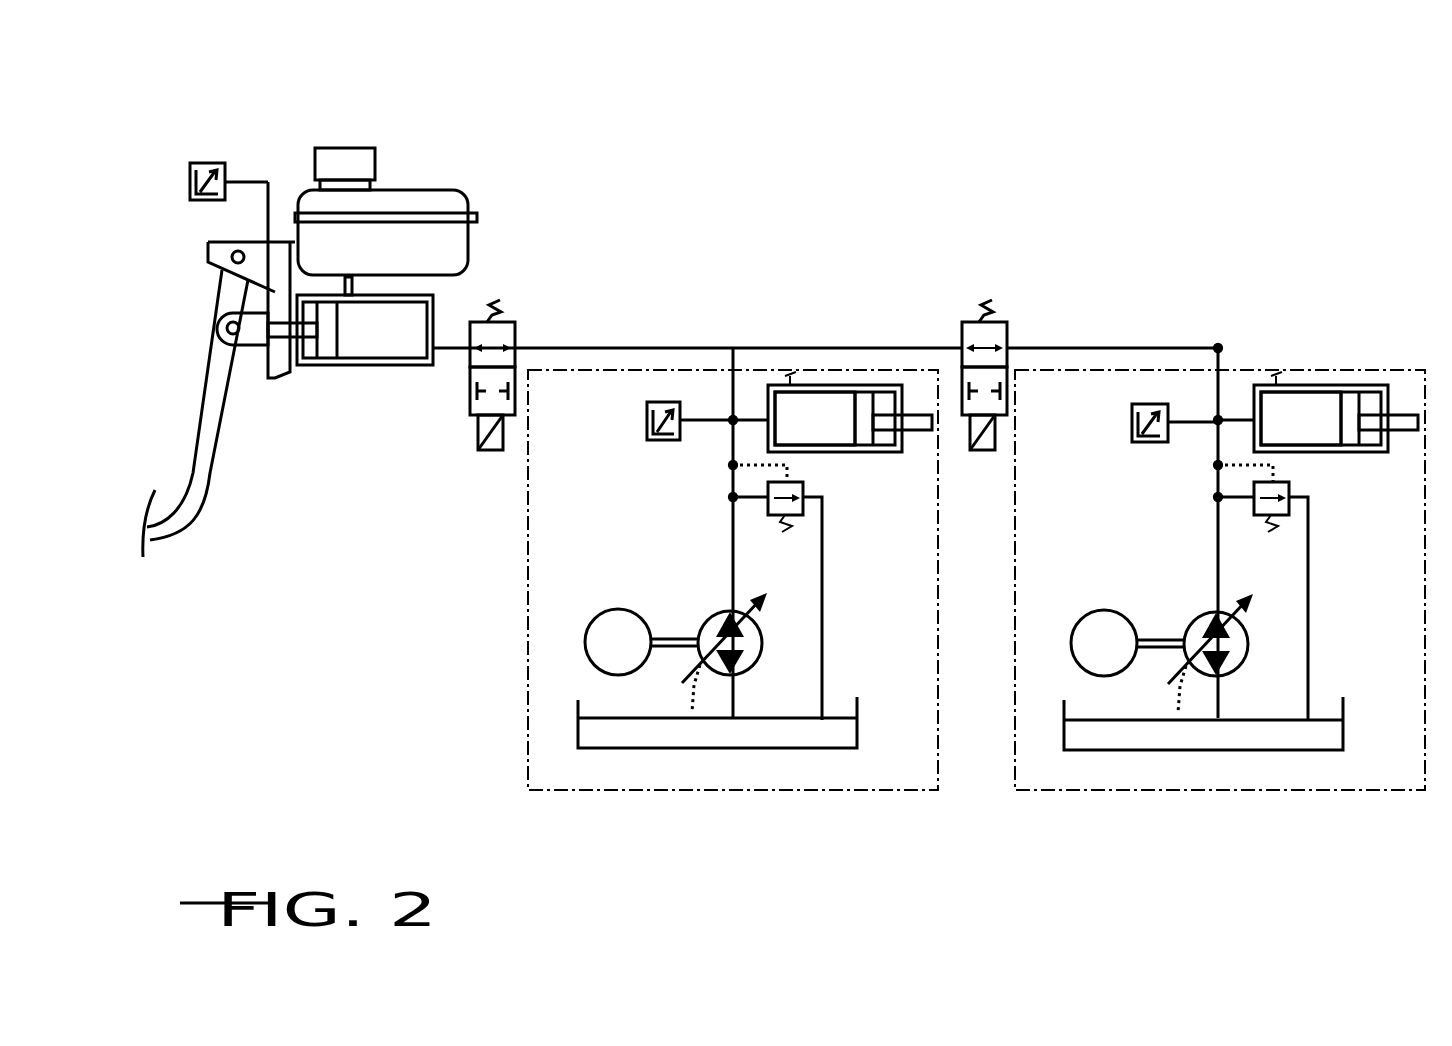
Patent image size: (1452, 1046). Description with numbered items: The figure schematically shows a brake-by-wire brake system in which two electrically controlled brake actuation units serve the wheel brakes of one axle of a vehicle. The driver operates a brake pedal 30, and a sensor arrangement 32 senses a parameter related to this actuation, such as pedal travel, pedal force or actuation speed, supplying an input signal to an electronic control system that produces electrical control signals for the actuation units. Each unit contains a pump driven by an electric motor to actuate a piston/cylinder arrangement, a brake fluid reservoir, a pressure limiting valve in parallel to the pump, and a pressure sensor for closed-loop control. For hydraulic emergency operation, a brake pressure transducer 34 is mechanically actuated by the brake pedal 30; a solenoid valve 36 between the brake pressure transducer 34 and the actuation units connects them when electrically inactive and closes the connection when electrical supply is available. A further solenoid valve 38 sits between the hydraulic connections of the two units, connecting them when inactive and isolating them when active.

The brake pedal 30 is at (200, 357).
The sensor arrangement 32 is at (218, 163).
The brake pressure transducer 34 is at (430, 163).
The solenoid valve 36 is at (518, 322).
The solenoid valve 38 is at (1008, 322).